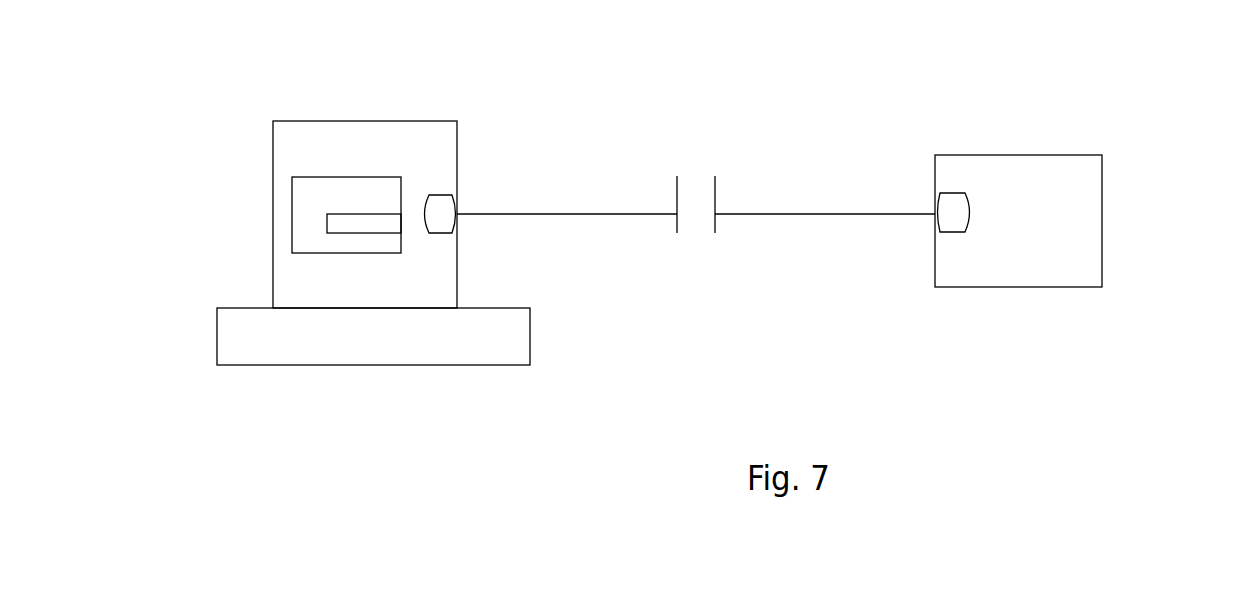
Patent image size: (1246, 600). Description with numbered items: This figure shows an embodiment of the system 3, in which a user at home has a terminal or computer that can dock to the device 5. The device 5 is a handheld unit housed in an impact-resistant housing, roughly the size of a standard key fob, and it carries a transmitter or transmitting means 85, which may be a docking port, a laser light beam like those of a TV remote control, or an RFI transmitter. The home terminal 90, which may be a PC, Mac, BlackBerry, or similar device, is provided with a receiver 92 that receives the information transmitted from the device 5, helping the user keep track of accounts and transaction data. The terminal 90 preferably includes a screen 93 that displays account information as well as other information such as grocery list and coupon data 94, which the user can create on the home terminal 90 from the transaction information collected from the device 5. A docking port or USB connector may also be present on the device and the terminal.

The system 3 is at (1156, 119).
The device 5 is at (1027, 148).
The transmitter or transmitting means 85 is at (940, 205).
The home terminal 90 is at (292, 158).
The receiver 92 is at (438, 213).
The screen 93 is at (383, 195).
The grocery list and coupon data 94 is at (350, 233).